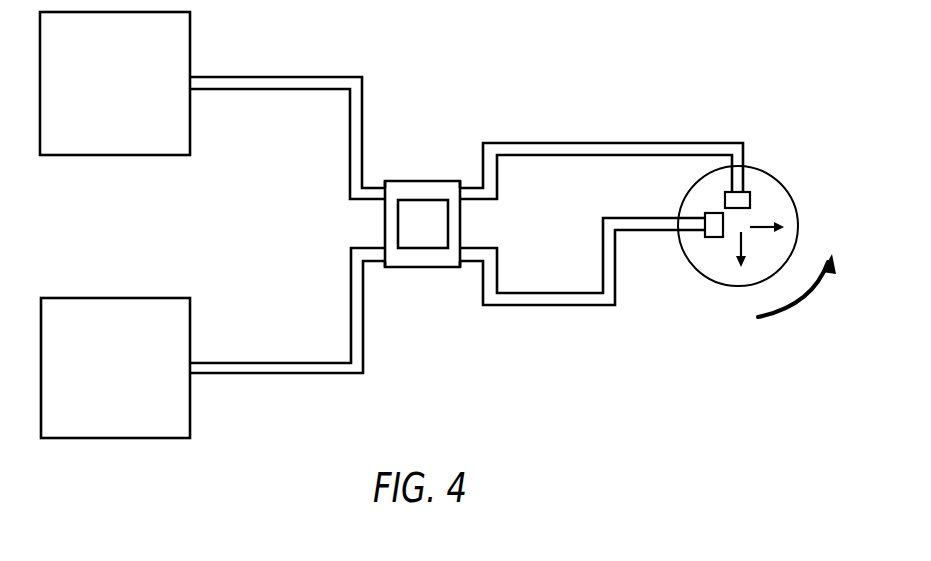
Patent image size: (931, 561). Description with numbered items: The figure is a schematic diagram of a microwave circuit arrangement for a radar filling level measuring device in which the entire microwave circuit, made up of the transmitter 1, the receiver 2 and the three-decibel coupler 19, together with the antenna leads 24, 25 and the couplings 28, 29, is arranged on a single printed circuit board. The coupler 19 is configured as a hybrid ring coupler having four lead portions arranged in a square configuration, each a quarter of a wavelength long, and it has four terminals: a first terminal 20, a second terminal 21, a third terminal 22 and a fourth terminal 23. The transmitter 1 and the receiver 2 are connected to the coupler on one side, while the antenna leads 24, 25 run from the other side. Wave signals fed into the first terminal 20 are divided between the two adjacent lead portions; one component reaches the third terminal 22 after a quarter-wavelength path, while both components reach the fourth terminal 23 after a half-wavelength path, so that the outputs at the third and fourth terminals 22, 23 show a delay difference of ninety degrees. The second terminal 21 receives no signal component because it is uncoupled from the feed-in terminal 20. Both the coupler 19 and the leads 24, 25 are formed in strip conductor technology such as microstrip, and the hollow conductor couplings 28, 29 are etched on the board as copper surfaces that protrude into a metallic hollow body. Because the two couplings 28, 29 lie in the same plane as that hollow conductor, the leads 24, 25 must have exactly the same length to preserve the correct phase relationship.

The transmitter 1 is at (197, 41).
The receiver 2 is at (193, 335).
The 3 dB coupler 19 is at (426, 206).
The first terminal 20 is at (383, 178).
The second terminal 21 is at (383, 271).
The third terminal 22 is at (463, 177).
The fourth terminal 23 is at (465, 271).
The antenna lead 24 is at (582, 147).
The antenna lead 25 is at (558, 298).
The hollow conductor coupling 28 is at (738, 200).
The hollow conductor coupling 29 is at (713, 227).